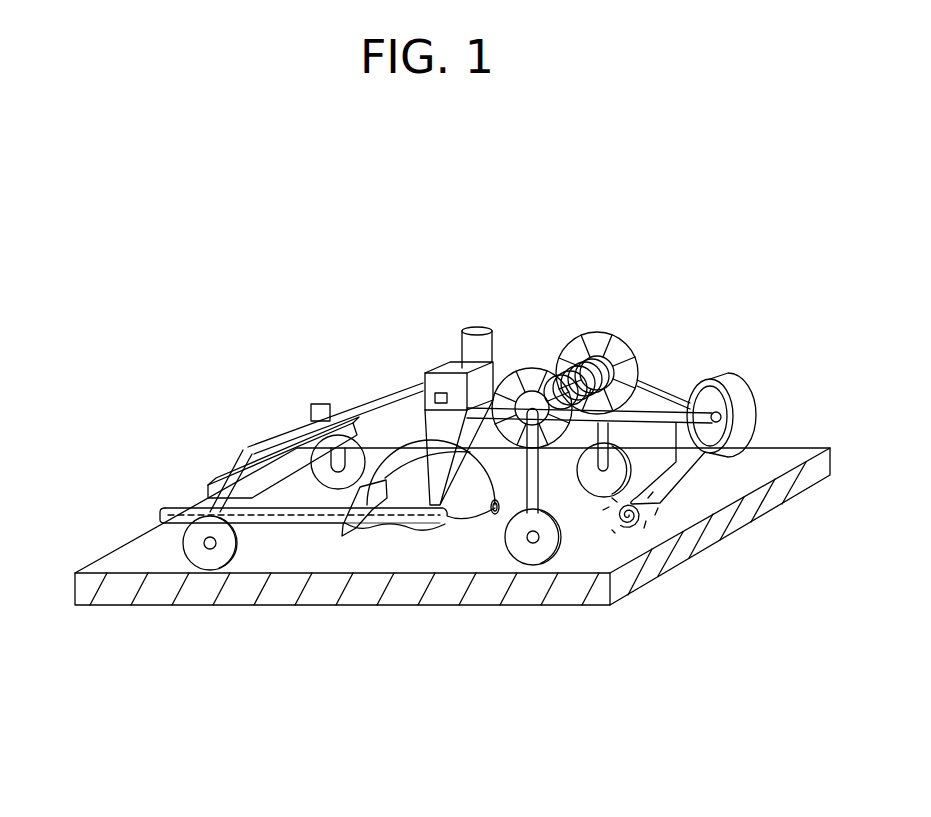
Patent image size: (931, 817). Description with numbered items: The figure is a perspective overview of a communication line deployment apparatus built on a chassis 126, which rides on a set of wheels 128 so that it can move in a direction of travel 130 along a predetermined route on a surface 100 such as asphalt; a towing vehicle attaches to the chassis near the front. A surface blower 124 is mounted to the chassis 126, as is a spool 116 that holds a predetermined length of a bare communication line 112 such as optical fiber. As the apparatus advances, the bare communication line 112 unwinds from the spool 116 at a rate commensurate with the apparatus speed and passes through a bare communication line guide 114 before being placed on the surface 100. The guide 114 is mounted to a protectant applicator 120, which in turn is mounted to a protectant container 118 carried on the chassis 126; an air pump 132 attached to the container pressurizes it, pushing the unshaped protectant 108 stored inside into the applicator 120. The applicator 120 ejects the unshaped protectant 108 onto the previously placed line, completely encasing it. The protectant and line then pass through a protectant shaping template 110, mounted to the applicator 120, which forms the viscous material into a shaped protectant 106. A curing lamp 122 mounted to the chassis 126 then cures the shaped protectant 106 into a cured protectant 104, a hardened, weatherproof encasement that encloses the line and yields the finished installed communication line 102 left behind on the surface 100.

The surface 100 is at (583, 562).
The installed communication line 102 is at (188, 513).
The cured protectant 104 is at (178, 523).
The shaped protectant 106 is at (322, 522).
The unshaped protectant 108 is at (387, 527).
The protectant shaping template 110 is at (392, 522).
The bare communication line 112 is at (470, 512).
The bare communication line guide 114 is at (495, 512).
The spool 116 is at (595, 365).
The protectant container 118 is at (453, 367).
The protectant applicator 120 is at (438, 433).
The curing lamp 122 is at (280, 460).
The surface blower 124 is at (690, 463).
The chassis 126 is at (622, 418).
The wheels 128 is at (540, 552).
The direction of travel 130 is at (772, 317).
The air pump 132 is at (475, 330).